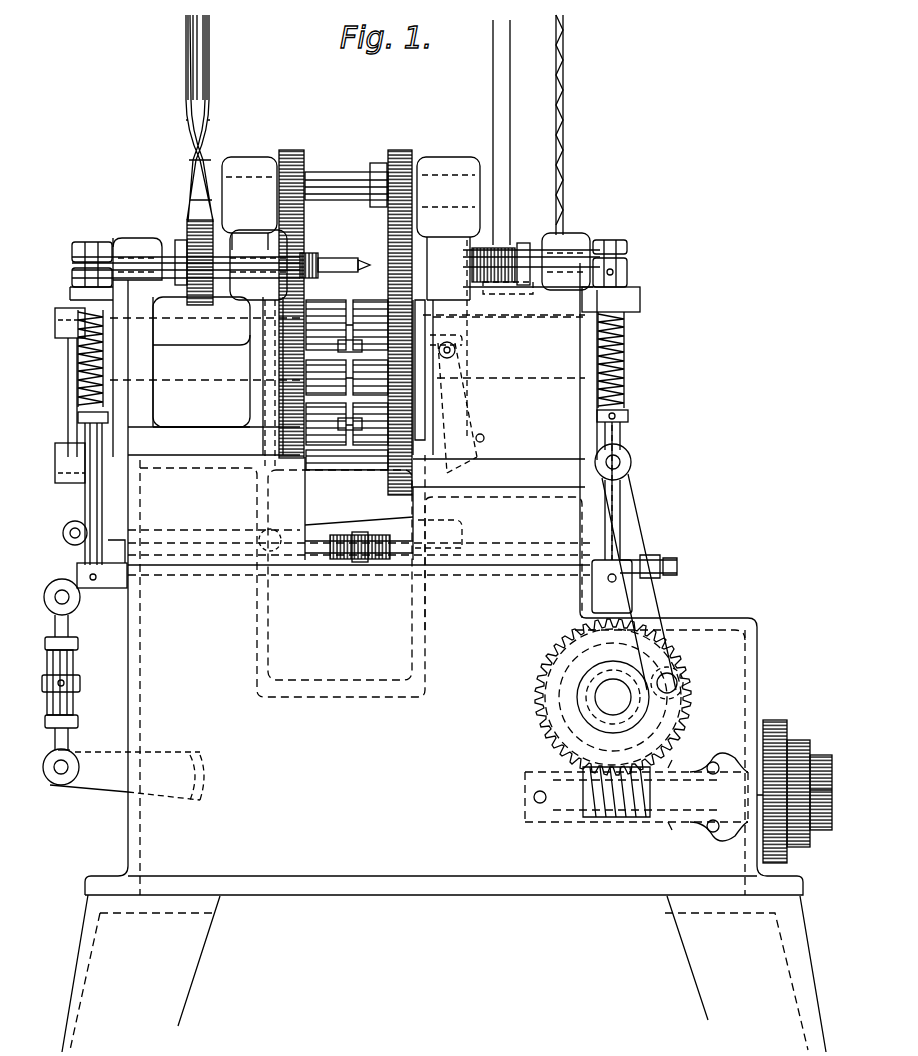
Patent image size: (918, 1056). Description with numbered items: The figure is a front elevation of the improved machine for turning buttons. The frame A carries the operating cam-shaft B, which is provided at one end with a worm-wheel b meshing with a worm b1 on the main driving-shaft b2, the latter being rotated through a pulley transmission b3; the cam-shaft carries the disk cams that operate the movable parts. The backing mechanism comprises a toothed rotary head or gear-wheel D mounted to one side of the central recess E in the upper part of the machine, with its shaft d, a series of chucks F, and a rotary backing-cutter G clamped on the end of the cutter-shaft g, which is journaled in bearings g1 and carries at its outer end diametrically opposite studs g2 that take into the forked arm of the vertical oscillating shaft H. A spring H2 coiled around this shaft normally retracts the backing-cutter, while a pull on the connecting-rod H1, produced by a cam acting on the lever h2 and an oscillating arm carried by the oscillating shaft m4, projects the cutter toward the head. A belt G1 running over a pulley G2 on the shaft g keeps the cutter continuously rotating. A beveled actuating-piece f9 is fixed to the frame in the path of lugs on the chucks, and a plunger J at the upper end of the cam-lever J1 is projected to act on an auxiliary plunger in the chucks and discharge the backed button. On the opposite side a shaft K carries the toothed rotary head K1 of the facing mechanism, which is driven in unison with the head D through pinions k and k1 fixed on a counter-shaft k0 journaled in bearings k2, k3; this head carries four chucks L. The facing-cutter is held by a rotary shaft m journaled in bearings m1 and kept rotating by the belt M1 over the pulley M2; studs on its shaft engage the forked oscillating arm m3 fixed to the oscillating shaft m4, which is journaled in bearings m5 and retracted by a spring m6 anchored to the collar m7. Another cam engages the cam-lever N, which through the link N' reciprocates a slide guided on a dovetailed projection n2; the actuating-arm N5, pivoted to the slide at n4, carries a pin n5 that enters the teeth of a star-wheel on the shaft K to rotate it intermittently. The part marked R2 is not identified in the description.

The frame A is at (444, 645).
The operating cam-shaft B is at (600, 692).
The worm-wheel b is at (545, 705).
The worm b1 is at (612, 812).
The main driving-shaft b2 is at (828, 775).
The pulley transmission b3 is at (790, 745).
The toothed rotary head D is at (408, 388).
The shaft d is at (615, 300).
The central recess E is at (359, 505).
The chucks F is at (392, 158).
The beveled actuating-piece f9 is at (428, 398).
The rotary backing-cutter G is at (312, 255).
The belt G1 is at (210, 75).
The pulley G2 is at (187, 225).
The cutter-shaft g is at (165, 255).
The bearings g1 is at (243, 245).
The studs g2 is at (92, 245).
The oscillating shaft H is at (85, 496).
The connecting-rod H1 is at (318, 552).
The spring H2 is at (80, 372).
The lever h2 is at (637, 535).
The plunger J is at (452, 348).
The cam-lever J1 is at (477, 448).
The shaft K is at (196, 376).
The toothed rotary head K1 is at (280, 397).
The pinion k is at (292, 152).
The counter-shaft k0 is at (358, 178).
The pinion k1 is at (405, 160).
The bearing k2 is at (265, 165).
The bearing k3 is at (465, 165).
The chucks L is at (340, 175).
The belt M1 is at (511, 100).
The pulley M2 is at (518, 245).
The rotary shaft m is at (543, 255).
The bearings m1 is at (470, 235).
The oscillating arm m3 is at (627, 260).
The oscillating shaft m4 is at (623, 435).
The bearings m5 is at (632, 302).
The spring m6 is at (630, 345).
The nut or collar m7 is at (628, 418).
The cam-lever N is at (123, 786).
The link N' is at (73, 682).
The actuating-arm N5 is at (68, 350).
The dovetailed projection n2 is at (108, 660).
The pivot n4 is at (62, 455).
The pin n5 is at (62, 320).
The strip R2 is at (573, 125).